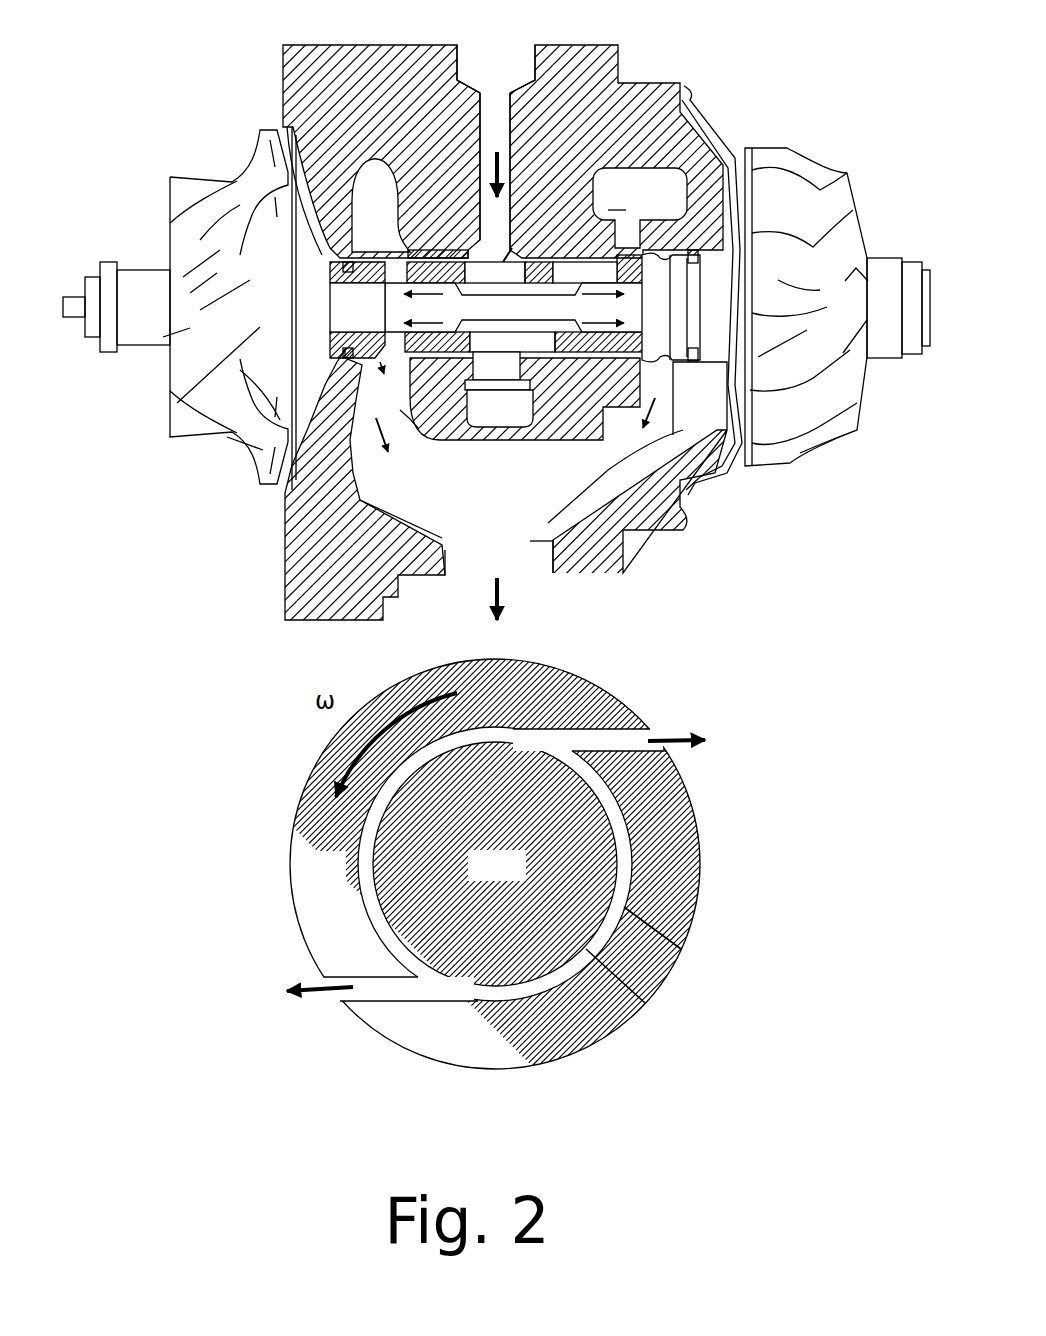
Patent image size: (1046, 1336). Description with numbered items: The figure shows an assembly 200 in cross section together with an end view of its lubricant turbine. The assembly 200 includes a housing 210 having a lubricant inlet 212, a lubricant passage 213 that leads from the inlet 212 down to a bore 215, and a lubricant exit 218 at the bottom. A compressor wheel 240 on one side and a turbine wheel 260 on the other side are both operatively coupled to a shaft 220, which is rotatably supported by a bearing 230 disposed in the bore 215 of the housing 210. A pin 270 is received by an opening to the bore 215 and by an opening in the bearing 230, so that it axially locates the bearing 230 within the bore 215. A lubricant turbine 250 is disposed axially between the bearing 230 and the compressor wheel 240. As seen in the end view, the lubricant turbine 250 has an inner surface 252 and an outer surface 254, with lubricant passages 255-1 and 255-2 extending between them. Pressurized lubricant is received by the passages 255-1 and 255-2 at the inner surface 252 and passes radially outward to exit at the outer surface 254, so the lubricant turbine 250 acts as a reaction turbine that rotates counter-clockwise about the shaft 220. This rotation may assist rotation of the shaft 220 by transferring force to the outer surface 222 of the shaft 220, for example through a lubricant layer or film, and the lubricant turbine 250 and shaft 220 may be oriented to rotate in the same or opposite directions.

The assembly 200 is at (523, 500).
The housing 210 is at (393, 108).
The lubricant inlet 212 is at (511, 50).
The lubricant passage 213 is at (519, 146).
The bore 215 is at (456, 248).
The lubricant exit 218 is at (518, 558).
The shaft 220 is at (535, 320).
The outer surface of the shaft 222 is at (645, 1003).
The bearing 230 is at (604, 275).
The compressor wheel 240 is at (176, 323).
The lubricant turbine 250 is at (341, 300).
The inner surface 252 is at (681, 949).
The outer surface 254 is at (692, 803).
The lubricant passage 255-1 is at (645, 730).
The lubricant passage 255-2 is at (339, 1001).
The turbine wheel 260 is at (878, 311).
The pin 270 is at (518, 418).